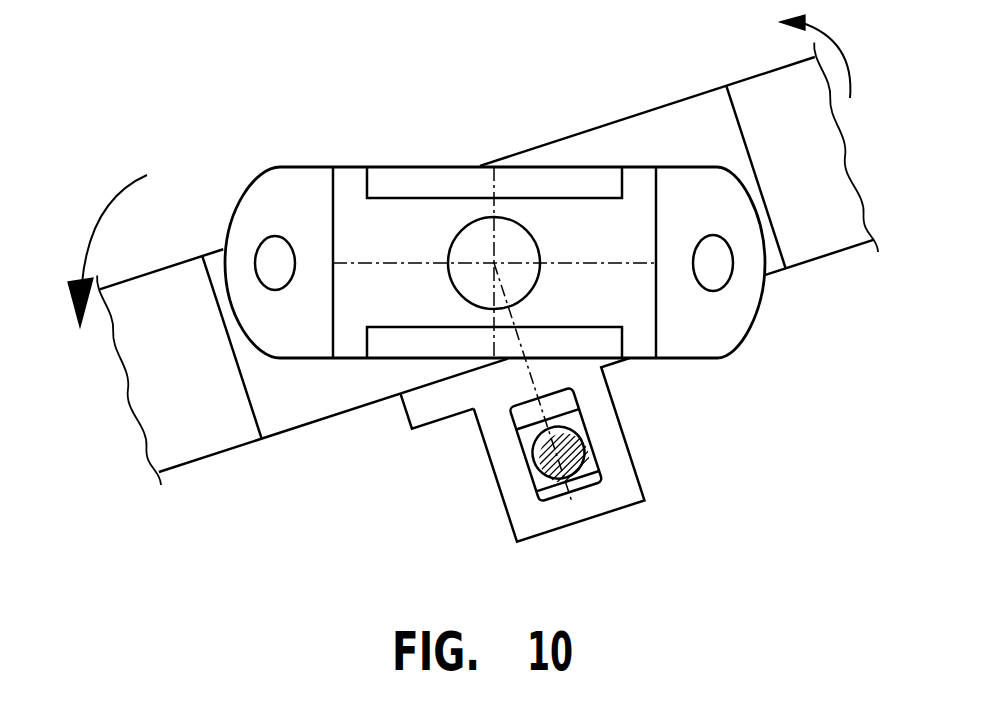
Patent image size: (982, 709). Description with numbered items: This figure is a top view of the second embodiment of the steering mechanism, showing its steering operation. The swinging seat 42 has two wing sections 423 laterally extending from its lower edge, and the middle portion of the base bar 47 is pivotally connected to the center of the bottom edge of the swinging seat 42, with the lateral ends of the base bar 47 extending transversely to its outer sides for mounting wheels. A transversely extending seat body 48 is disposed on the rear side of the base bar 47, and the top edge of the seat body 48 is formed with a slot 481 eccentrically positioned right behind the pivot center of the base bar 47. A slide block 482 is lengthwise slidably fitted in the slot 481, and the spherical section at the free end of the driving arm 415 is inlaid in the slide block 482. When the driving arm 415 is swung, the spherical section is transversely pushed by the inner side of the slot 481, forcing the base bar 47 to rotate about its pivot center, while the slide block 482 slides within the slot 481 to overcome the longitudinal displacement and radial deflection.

The swinging seat 42 is at (412, 188).
The wing sections 423 is at (310, 203).
The base bar 47 is at (813, 227).
The seat body 48 is at (628, 508).
The slot 481 is at (473, 412).
The slide block 482 is at (573, 423).
The driving arm 415 is at (585, 462).